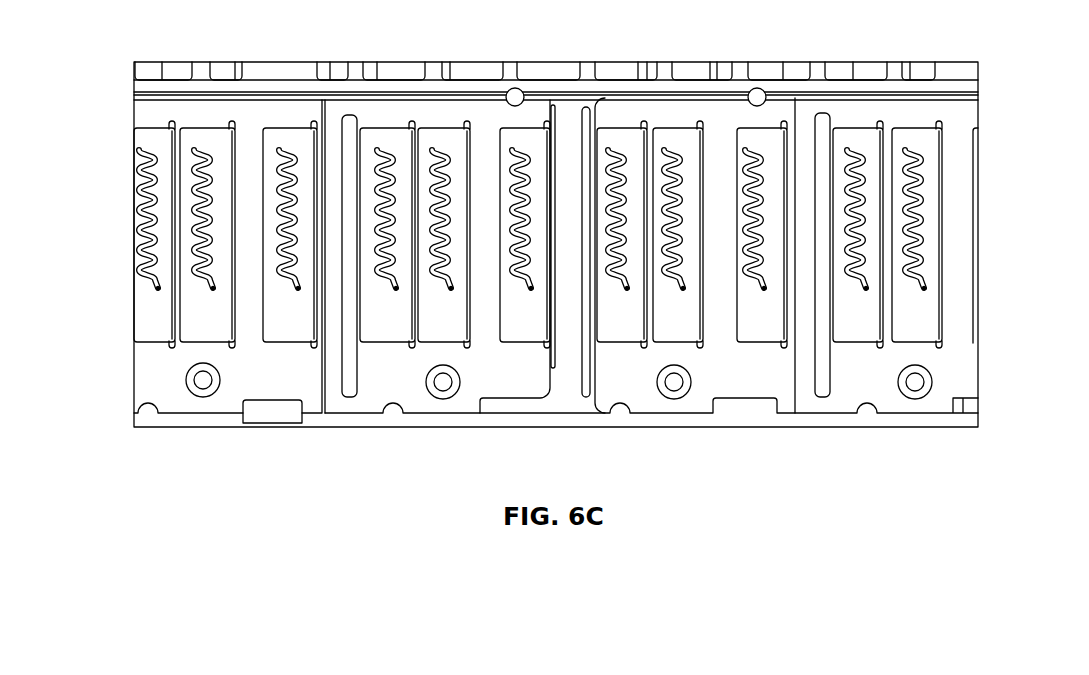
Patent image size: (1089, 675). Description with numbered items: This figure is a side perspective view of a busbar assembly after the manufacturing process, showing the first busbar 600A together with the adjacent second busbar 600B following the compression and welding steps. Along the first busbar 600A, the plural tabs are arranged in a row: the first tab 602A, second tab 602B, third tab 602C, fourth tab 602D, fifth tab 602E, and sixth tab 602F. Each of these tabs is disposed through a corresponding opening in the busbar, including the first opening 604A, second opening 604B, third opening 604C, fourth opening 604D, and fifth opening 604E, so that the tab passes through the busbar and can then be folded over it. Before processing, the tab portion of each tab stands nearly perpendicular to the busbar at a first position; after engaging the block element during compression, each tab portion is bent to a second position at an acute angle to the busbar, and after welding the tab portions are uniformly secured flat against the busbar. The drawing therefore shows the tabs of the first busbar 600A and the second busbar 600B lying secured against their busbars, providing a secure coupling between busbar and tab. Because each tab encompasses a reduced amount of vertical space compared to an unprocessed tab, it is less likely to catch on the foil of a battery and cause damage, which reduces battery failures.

The first busbar 600A is at (322, 107).
The second busbar 600B is at (840, 92).
The first tab 602A is at (155, 138).
The second tab 602B is at (212, 327).
The third tab 602C is at (300, 326).
The fourth tab 602D is at (373, 138).
The fifth tab 602E is at (450, 138).
The sixth tab 602F is at (540, 138).
The first opening 604A is at (637, 138).
The second opening 604B is at (682, 325).
The third opening 604C is at (768, 325).
The fourth opening 604D is at (872, 325).
The fifth opening 604E is at (927, 303).